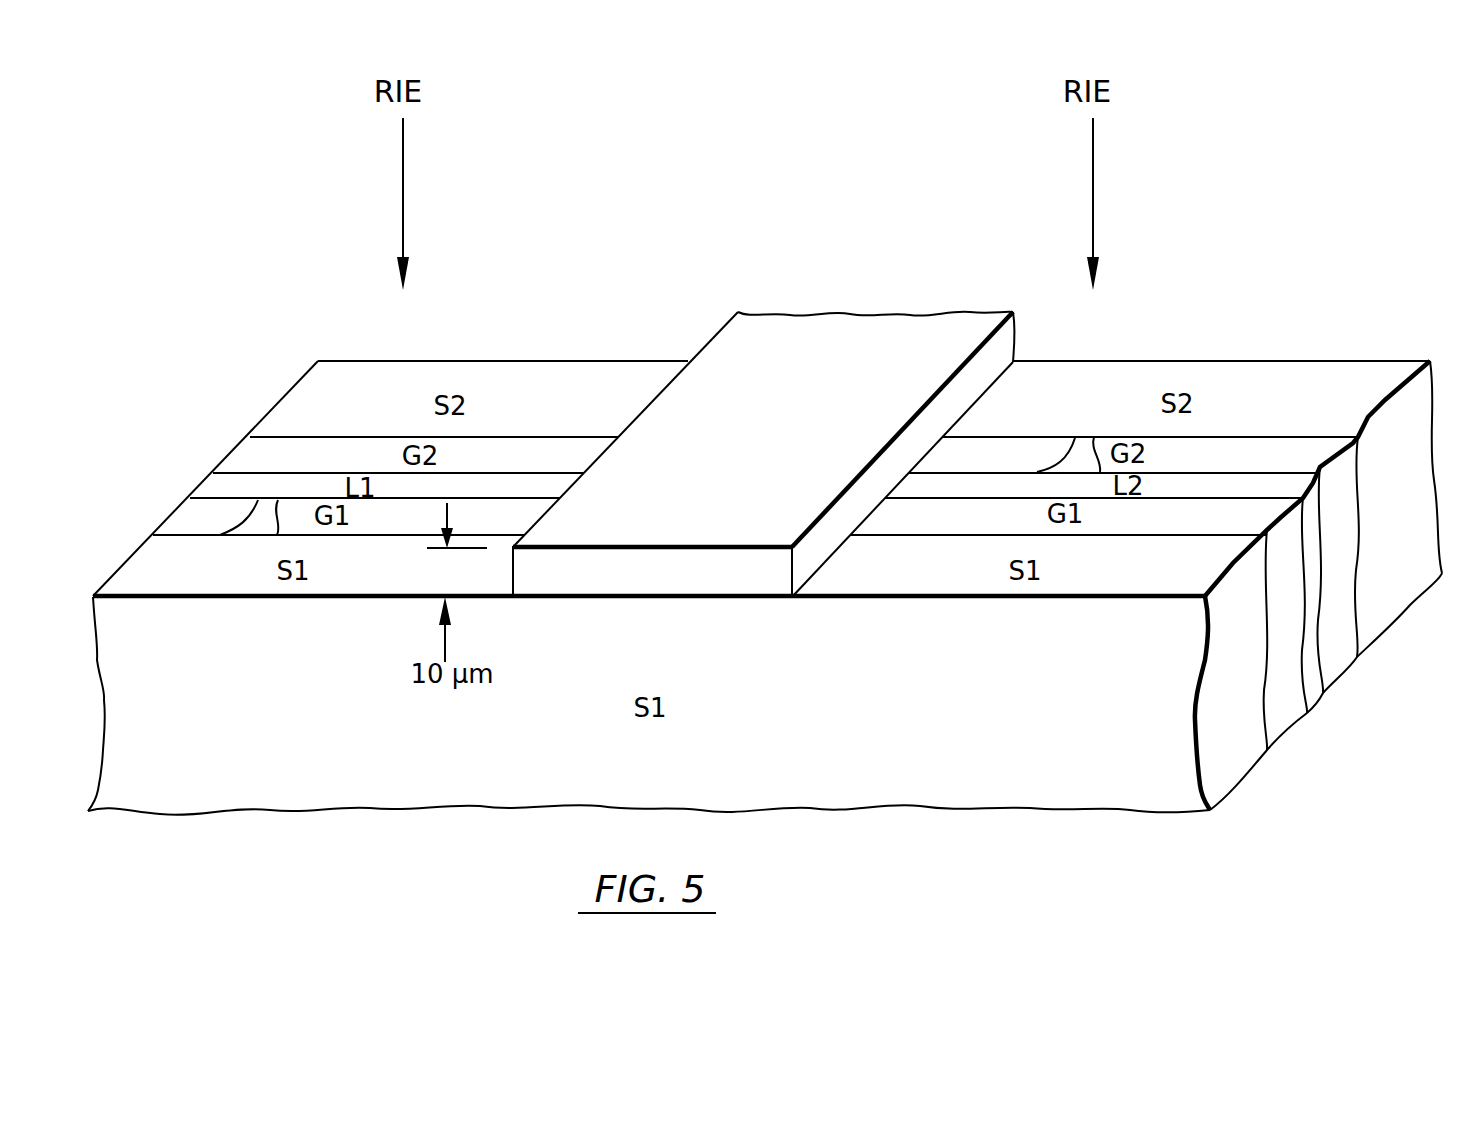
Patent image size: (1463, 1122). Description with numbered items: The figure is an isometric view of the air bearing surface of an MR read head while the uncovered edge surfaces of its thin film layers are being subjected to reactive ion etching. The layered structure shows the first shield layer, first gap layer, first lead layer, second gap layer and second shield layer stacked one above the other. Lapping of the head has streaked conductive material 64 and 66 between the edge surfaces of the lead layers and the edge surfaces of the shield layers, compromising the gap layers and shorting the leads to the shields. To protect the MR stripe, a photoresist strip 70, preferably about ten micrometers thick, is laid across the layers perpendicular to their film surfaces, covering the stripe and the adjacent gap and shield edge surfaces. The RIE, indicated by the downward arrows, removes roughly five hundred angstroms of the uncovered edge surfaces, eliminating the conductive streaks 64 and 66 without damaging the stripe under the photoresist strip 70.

The streaked conductive material 64 is at (261, 512).
The streaked conductive material 66 is at (1082, 453).
The photoresist strip 70 is at (822, 372).